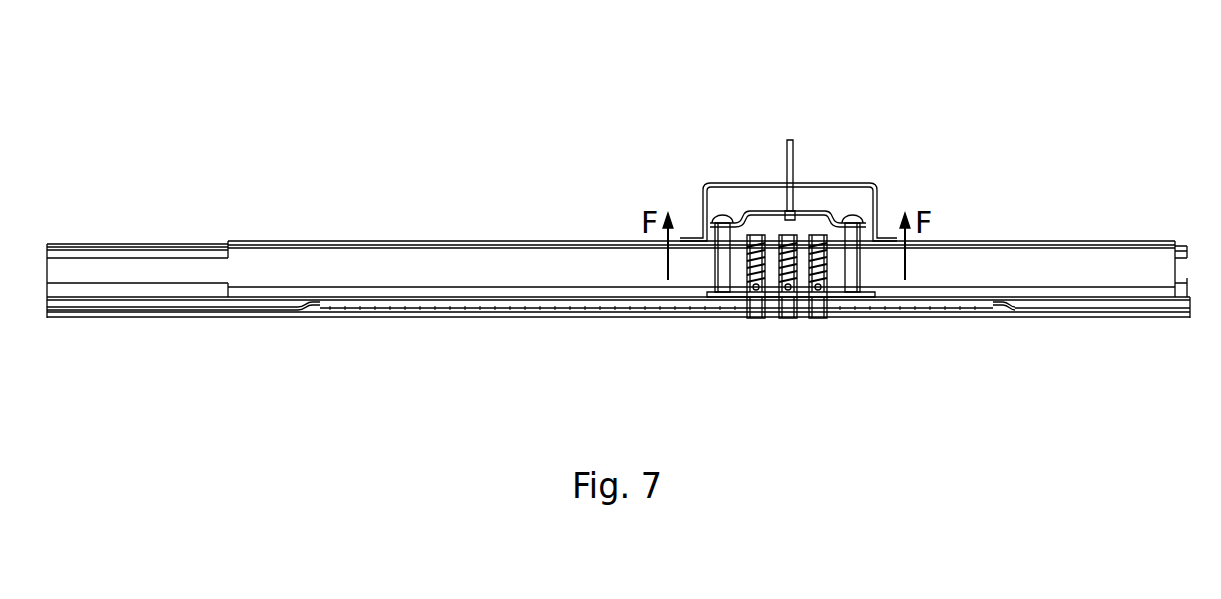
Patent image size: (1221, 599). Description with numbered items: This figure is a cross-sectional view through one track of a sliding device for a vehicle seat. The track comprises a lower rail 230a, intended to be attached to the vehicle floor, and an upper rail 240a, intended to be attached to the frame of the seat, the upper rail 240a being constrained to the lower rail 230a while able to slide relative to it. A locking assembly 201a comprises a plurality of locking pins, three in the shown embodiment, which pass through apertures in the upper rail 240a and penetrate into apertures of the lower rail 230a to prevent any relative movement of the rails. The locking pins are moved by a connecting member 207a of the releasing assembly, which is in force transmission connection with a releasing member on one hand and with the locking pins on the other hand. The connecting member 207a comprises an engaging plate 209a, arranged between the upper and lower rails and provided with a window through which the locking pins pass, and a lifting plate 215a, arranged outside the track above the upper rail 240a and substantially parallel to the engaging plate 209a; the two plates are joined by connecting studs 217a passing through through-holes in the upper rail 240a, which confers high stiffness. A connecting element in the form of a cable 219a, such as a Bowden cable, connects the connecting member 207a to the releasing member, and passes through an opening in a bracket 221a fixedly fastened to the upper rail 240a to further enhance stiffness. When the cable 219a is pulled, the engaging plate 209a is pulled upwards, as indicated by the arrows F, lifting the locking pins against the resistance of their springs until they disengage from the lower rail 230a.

The locking assembly 201a is at (797, 328).
The connecting member 207a is at (872, 272).
The engaging plate 209a is at (747, 300).
The lifting plate 215a is at (825, 213).
The connecting studs 217a is at (720, 258).
The cable 219a is at (790, 140).
The bracket 221a is at (876, 184).
The lower rail 230a is at (172, 245).
The upper rail 240a is at (362, 240).